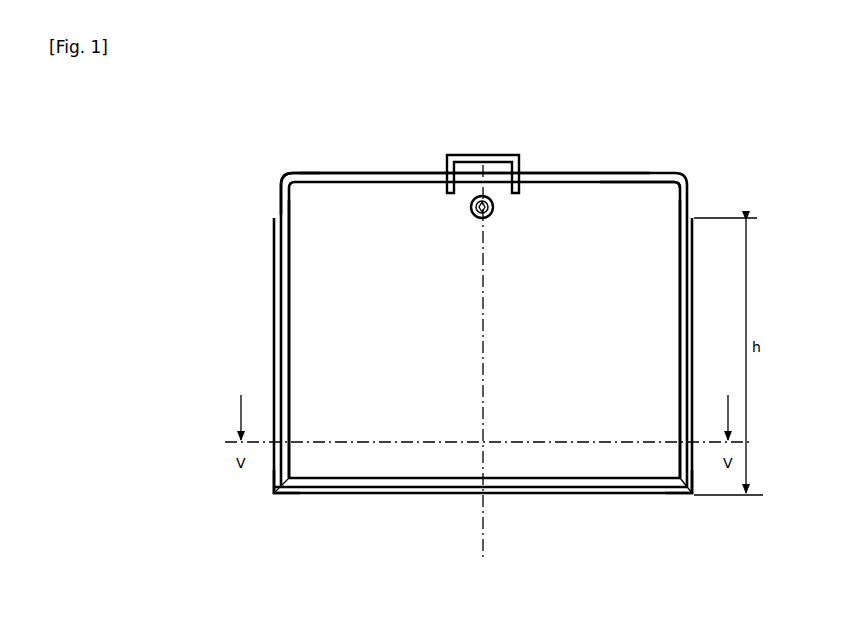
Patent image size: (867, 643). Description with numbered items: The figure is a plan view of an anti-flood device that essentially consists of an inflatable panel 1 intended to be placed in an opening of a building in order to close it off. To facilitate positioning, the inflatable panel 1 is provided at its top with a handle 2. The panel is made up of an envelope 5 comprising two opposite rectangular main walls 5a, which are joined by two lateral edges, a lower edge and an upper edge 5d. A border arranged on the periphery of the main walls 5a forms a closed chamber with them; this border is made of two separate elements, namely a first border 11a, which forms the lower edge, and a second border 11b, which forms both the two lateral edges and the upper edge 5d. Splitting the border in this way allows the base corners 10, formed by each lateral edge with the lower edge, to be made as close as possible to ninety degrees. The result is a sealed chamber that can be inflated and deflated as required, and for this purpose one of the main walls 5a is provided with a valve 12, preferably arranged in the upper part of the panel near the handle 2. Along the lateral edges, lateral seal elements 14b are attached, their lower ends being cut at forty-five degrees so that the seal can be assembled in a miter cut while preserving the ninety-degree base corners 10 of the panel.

The inflatable panel 1 is at (733, 174).
The handle 2 is at (462, 157).
The envelope 5 is at (338, 169).
The main wall 5a is at (318, 200).
The upper edge 5d is at (396, 172).
The base corner 10 is at (270, 497).
The first border 11a is at (380, 472).
The second border 11b is at (651, 178).
The valve 12 is at (489, 216).
The lateral seal element 14b is at (275, 303).